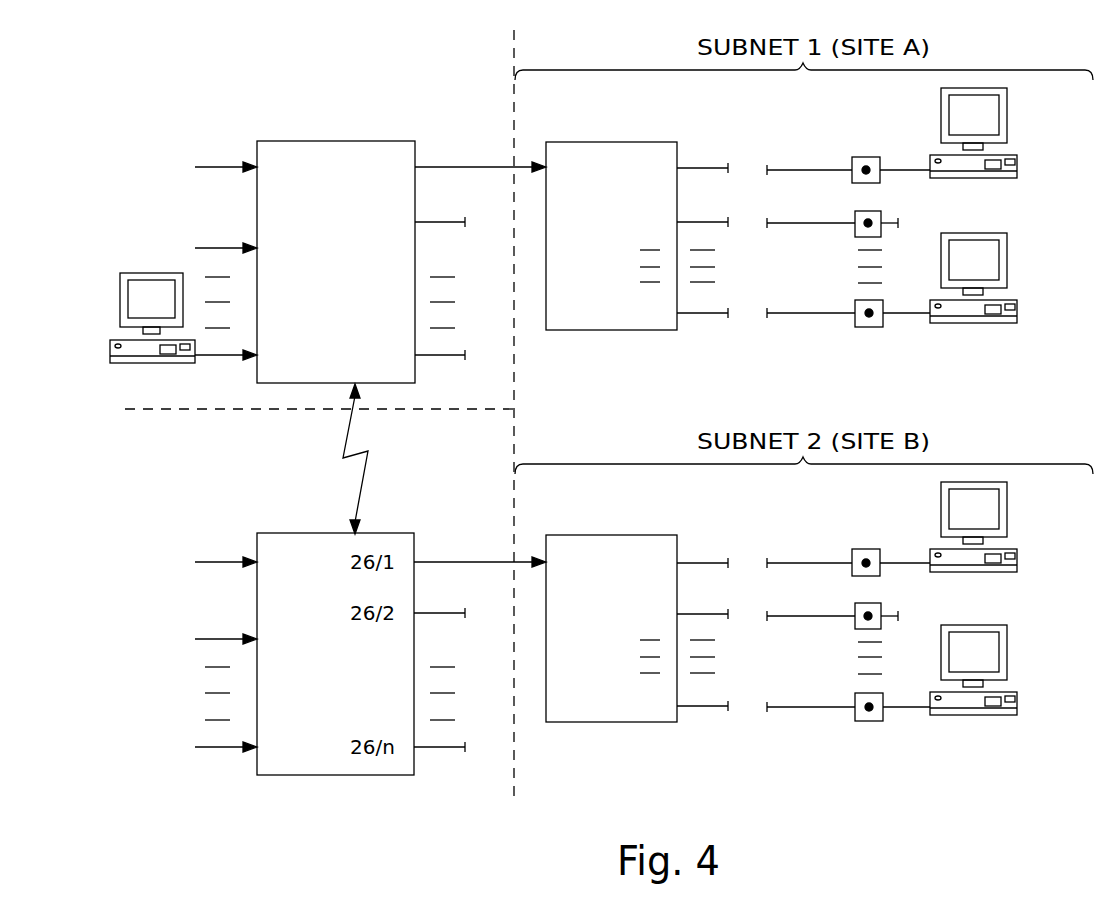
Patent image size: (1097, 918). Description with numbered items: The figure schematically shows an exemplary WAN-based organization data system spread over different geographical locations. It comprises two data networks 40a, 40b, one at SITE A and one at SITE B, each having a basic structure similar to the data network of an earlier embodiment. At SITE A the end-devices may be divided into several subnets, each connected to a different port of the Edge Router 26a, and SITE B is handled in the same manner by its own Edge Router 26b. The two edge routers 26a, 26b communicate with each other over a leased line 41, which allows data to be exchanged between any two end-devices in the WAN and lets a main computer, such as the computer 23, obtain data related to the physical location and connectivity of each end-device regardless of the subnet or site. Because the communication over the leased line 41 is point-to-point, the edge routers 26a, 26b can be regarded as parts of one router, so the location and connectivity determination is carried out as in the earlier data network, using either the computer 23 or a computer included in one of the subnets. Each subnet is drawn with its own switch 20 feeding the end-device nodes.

The data network 40a is at (186, 132).
The data network 40b is at (186, 508).
The Edge Router 26a is at (347, 141).
The Edge Router 26b is at (292, 533).
The computer 23 is at (156, 272).
The leased line 41 is at (363, 490).
The subnet switch / hub 20 is at (608, 142).